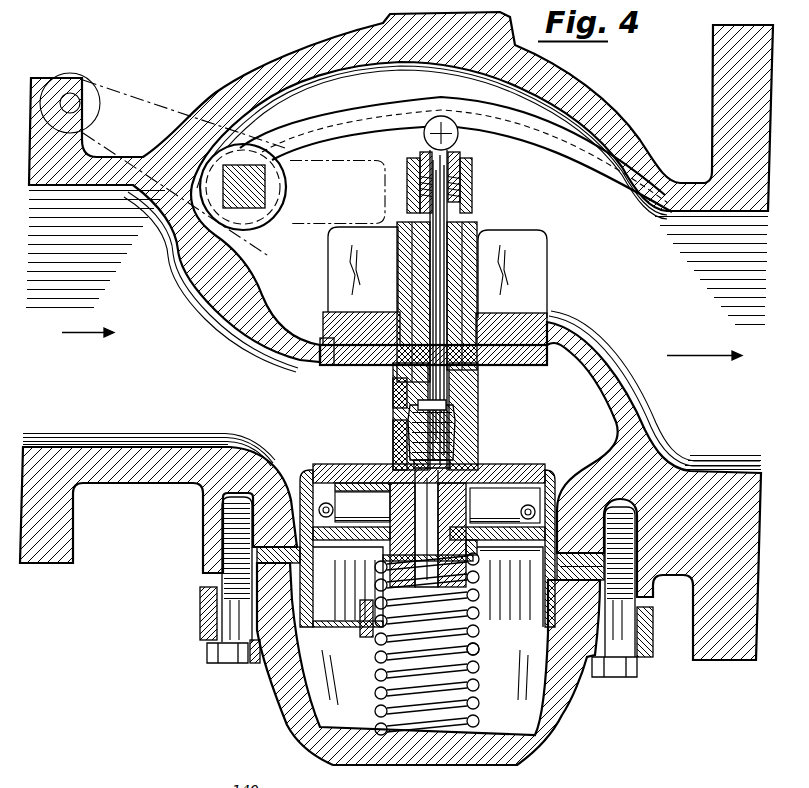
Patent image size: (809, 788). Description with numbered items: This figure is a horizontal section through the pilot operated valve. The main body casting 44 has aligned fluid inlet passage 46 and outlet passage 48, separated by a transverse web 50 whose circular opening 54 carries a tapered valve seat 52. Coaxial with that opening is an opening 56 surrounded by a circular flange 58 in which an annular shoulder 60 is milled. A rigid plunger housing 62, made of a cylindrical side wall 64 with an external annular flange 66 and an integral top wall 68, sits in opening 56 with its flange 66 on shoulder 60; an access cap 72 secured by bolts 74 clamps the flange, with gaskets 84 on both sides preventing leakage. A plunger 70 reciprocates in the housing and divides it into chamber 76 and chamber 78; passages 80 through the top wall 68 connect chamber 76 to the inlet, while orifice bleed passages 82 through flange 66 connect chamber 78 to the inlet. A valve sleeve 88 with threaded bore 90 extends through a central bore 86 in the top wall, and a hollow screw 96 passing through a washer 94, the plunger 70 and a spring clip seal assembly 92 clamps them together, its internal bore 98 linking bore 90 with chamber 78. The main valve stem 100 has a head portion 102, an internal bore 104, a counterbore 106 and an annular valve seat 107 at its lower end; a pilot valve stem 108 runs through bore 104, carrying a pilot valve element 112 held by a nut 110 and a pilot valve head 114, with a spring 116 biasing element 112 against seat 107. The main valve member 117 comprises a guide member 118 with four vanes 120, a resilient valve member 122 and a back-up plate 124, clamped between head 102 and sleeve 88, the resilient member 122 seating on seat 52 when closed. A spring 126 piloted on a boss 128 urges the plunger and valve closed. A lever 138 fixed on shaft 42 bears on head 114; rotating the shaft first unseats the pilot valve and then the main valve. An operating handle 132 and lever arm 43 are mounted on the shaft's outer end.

The shaft 42 is at (248, 209).
The lever arm 43 is at (132, 100).
The main body casting 44 is at (110, 491).
The fluid inlet passage 46 is at (40, 313).
The fluid outlet passage 48 is at (754, 266).
The transverse web 50 is at (178, 268).
The tapered valve seat 52 is at (320, 350).
The circular opening 54 is at (338, 306).
The opening 56 is at (607, 515).
The circular flange 58 is at (206, 522).
The annular shoulder 60 is at (267, 548).
The plunger housing 62 is at (304, 470).
The cylindrical side wall 64 is at (316, 628).
The annular flange 66 is at (565, 570).
The top wall 68 is at (542, 472).
The plunger 70 is at (530, 570).
The access cap 72 is at (580, 712).
The bolts 74 is at (235, 668).
The chamber 76 is at (356, 480).
The chamber 78 is at (352, 628).
The passages 80 is at (326, 502).
The orifice bleed passages 82 is at (320, 580).
The gaskets 84 is at (576, 582).
The central bore 86 is at (468, 450).
The valve sleeve 88 is at (396, 387).
The threaded bore 90 is at (472, 433).
The spring clip seal assembly 92 is at (492, 514).
The washer 94 is at (477, 553).
The hollow screw 96 is at (378, 565).
The internal bore 98 is at (376, 601).
The main valve stem 100 is at (400, 302).
The head portion 102 is at (462, 159).
The internal bore 104 is at (402, 262).
The counterbore 106 is at (468, 196).
The annular valve seat 107 is at (470, 412).
The pilot valve stem 108 is at (472, 204).
The nut 110 is at (395, 432).
The pilot valve element 112 is at (395, 406).
The pilot valve head 114 is at (459, 132).
The spring 116 is at (415, 170).
The main valve member 117 is at (344, 368).
The guide member 118 is at (522, 313).
The vanes 120 is at (527, 240).
The resilient valve member 122 is at (550, 320).
The back-up plate 124 is at (550, 362).
The spring 126 is at (480, 660).
The boss 128 is at (472, 718).
The operating handle 132 is at (318, 225).
The lever 138 is at (305, 118).